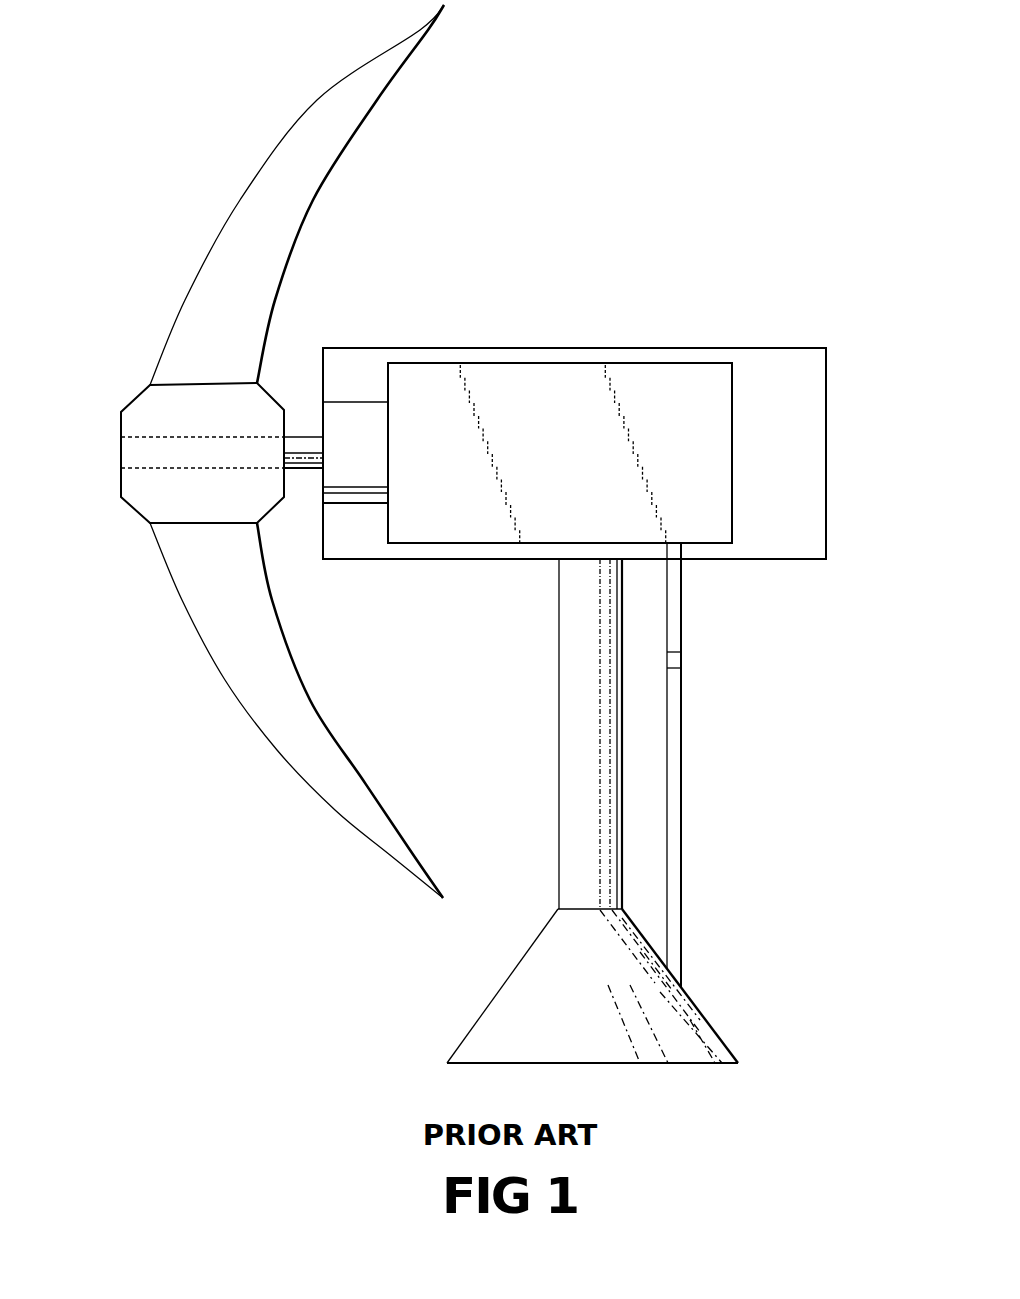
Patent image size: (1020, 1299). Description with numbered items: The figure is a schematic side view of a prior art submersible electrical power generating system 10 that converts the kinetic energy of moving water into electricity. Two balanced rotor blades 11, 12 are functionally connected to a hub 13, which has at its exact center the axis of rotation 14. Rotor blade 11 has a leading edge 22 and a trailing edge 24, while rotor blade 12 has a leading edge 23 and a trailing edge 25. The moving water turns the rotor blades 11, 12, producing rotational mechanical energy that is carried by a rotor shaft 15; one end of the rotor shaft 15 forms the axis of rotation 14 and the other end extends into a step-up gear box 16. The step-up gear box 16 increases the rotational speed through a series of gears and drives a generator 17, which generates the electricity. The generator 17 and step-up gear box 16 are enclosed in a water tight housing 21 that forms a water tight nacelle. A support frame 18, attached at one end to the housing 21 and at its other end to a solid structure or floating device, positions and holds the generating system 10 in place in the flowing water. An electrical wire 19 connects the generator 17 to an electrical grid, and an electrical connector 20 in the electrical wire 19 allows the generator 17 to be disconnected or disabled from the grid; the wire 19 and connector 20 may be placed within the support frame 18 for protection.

The electrical power generating system 10 is at (580, 200).
The rotor blade 11 is at (250, 252).
The rotor blade 12 is at (265, 682).
The hub 13 is at (163, 497).
The axis of rotation 14 is at (143, 453).
The rotor shaft 15 is at (300, 447).
The step-up gear box 16 is at (362, 427).
The generator 17 is at (668, 393).
The support frame 18 is at (588, 638).
The electrical wire 19 is at (676, 910).
The electrical connector 20 is at (682, 662).
The water tight housing 21 is at (826, 458).
The leading edge 22 is at (305, 120).
The leading edge 23 is at (325, 800).
The trailing edge 24 is at (335, 176).
The trailing edge 25 is at (362, 778).